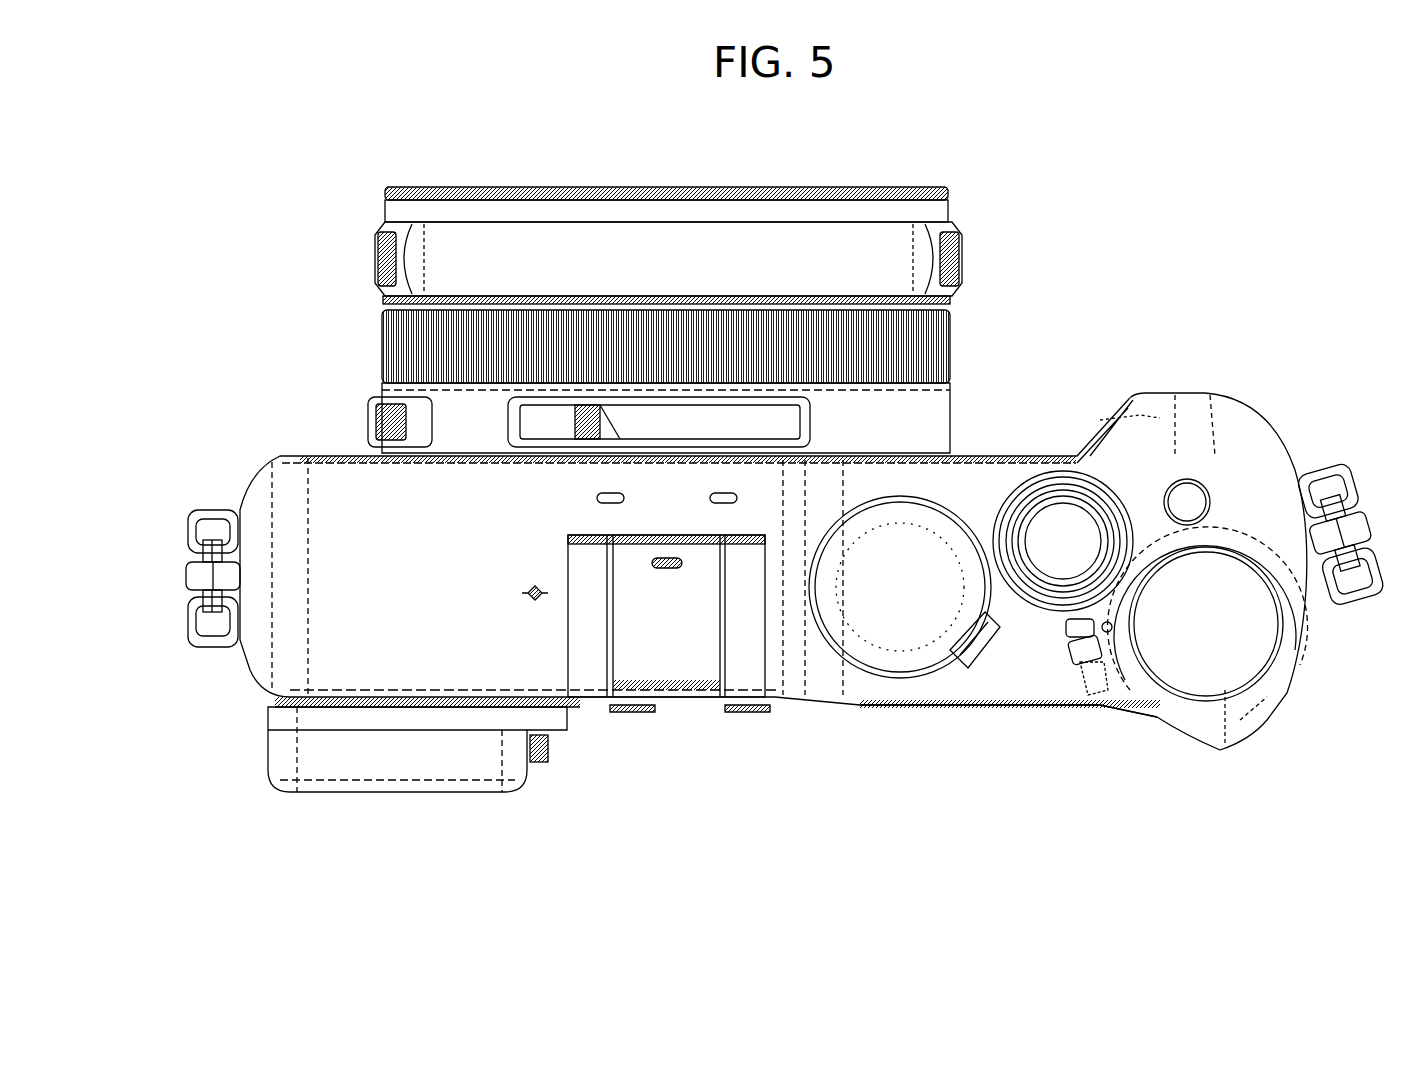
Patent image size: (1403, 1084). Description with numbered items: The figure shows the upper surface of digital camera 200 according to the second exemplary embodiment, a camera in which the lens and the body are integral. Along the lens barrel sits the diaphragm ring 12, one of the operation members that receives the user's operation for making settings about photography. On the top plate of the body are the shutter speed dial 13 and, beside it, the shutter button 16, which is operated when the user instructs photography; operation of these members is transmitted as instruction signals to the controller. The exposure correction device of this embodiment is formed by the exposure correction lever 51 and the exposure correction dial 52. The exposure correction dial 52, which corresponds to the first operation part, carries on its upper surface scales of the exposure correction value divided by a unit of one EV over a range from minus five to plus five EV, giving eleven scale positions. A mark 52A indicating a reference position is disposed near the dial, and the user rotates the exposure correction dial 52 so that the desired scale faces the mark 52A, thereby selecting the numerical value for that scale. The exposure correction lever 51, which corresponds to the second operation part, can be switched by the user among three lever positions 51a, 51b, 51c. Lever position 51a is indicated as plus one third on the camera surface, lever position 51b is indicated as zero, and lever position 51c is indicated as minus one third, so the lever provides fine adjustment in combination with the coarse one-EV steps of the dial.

The digital camera 200 is at (300, 438).
The diaphragm ring 12 is at (797, 247).
The shutter speed dial 13 is at (897, 660).
The shutter button 16 is at (1045, 530).
The exposure correction lever 51 is at (1062, 728).
The lever position 51a is at (1075, 633).
The lever position 51b is at (1085, 657).
The lever position 51c is at (1093, 680).
The exposure correction dial 52 is at (1250, 683).
The mark 52A is at (1107, 637).